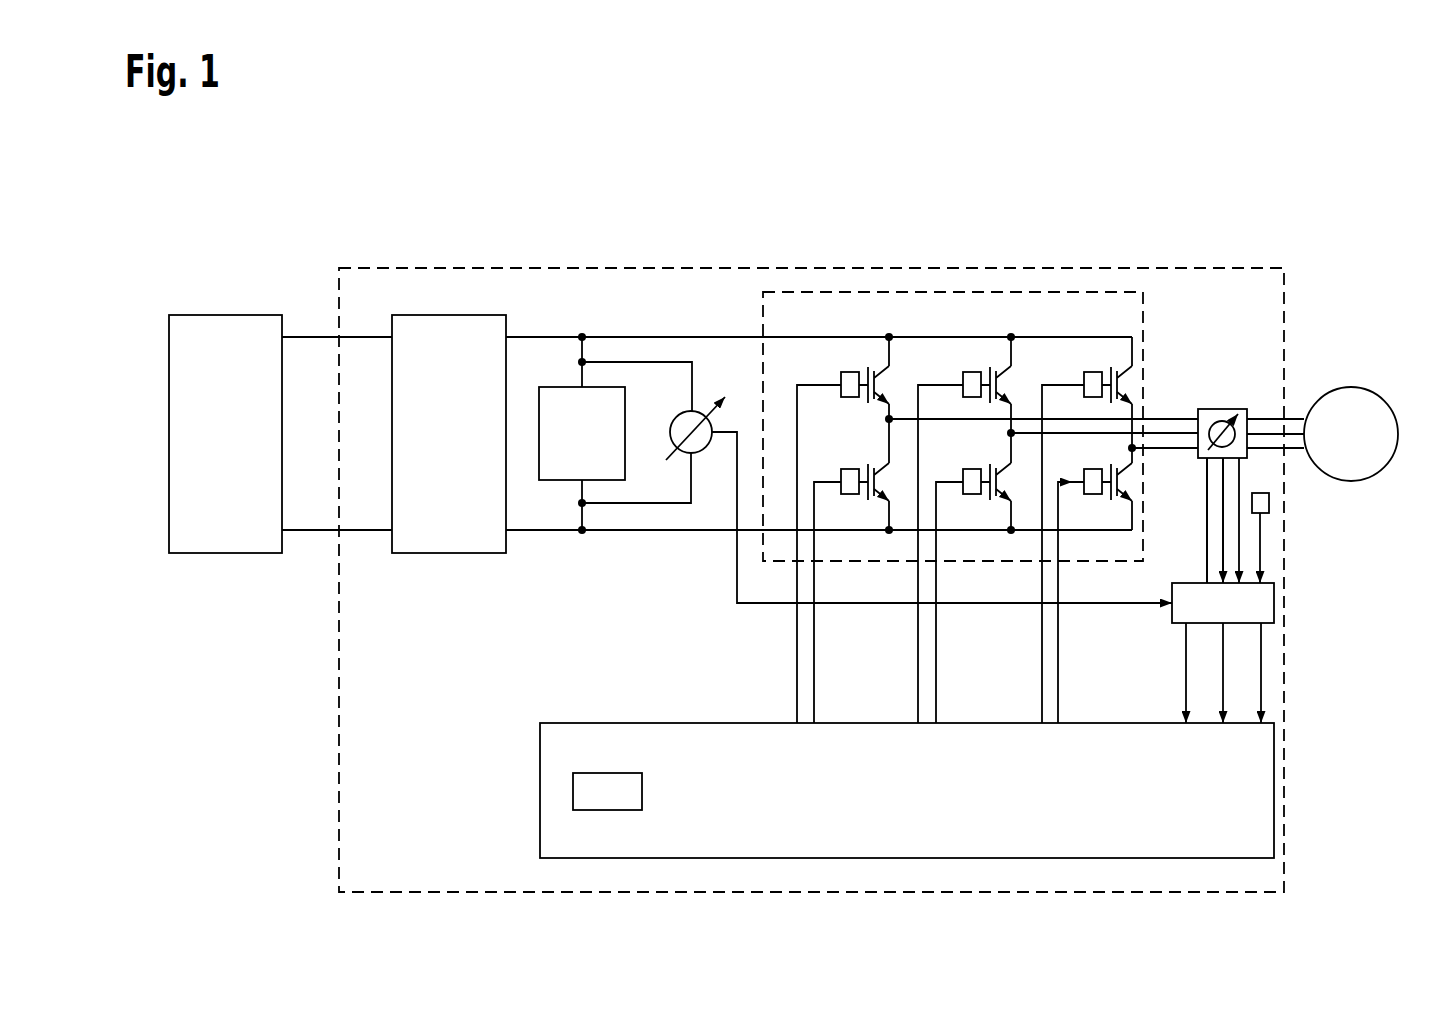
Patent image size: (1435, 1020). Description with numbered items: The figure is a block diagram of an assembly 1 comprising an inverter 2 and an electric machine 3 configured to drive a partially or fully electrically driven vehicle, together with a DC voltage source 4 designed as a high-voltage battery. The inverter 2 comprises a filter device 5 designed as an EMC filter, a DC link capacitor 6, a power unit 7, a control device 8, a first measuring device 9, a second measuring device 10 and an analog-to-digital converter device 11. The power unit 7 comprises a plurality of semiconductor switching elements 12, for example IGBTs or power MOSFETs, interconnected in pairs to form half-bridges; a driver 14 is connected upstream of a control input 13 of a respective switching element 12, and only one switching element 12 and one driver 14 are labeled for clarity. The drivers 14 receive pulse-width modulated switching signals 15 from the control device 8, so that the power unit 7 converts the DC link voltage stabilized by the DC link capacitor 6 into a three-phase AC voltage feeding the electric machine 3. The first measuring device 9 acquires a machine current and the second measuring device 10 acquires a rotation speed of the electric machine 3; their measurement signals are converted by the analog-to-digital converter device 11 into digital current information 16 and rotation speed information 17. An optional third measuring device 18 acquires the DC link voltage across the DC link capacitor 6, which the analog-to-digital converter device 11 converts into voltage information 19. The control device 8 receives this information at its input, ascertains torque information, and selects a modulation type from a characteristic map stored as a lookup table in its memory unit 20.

The assembly 1 is at (1340, 188).
The inverter 2 is at (1247, 268).
The electric machine 3 is at (1350, 387).
The DC voltage source 4 is at (228, 315).
The filter device 5 is at (448, 315).
The DC link capacitor 6 is at (548, 387).
The power unit 7 is at (1102, 292).
The control device 8 is at (575, 723).
The first measuring device 9 is at (1222, 409).
The second measuring device 10 is at (1269, 500).
The analog-to-digital converter device 11 is at (1274, 595).
The switching element 12 is at (847, 306).
The control input 13 is at (868, 367).
The driver 14 is at (850, 372).
The switching signals 15 is at (822, 716).
The current information 16 is at (1223, 688).
The rotation speed information 17 is at (1261, 670).
The third measuring device 18 is at (700, 410).
The voltage information 19 is at (1186, 672).
The memory unit 20 is at (573, 792).